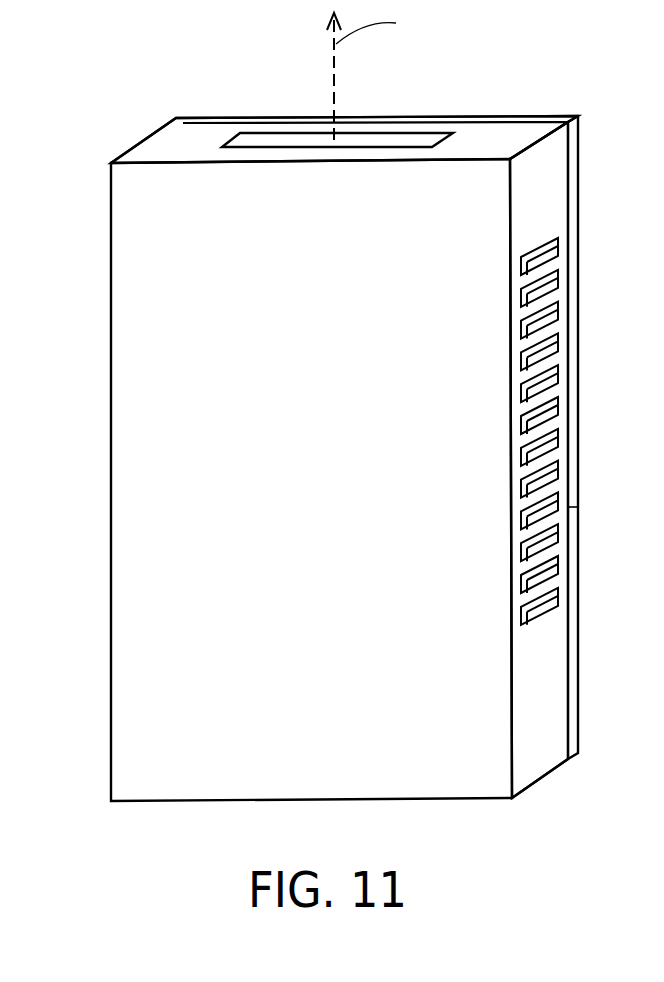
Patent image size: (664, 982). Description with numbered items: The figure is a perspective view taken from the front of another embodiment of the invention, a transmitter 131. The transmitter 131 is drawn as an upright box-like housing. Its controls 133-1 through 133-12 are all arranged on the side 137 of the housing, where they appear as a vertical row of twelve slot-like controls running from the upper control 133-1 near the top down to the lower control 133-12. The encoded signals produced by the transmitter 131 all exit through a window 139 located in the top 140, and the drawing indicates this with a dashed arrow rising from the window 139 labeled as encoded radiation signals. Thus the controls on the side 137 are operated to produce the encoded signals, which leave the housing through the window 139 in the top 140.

The transmitter 131 is at (380, 430).
The control 133-1 is at (548, 250).
The control 133-12 is at (545, 609).
The side 137 is at (545, 710).
The window 139 is at (298, 143).
The top 140 is at (489, 134).